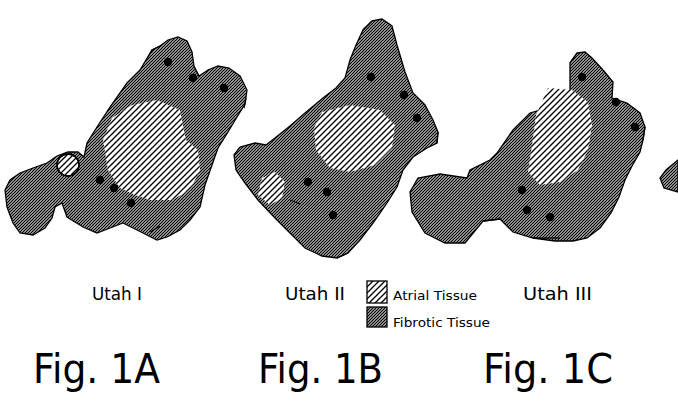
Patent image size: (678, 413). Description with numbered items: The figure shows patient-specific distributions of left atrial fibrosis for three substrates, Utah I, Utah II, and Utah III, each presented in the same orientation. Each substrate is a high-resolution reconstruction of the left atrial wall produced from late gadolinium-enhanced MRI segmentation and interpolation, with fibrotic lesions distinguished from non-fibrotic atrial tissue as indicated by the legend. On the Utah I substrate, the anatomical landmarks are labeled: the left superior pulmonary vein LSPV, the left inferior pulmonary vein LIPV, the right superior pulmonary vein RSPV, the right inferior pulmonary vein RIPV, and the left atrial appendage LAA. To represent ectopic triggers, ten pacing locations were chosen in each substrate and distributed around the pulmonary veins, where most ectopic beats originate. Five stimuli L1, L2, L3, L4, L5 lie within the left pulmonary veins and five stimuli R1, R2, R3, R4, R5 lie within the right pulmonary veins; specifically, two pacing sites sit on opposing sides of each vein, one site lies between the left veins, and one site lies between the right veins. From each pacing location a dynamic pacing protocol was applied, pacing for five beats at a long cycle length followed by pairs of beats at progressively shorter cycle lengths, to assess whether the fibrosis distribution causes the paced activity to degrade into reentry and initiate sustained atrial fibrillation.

In FIG. 1A, the right pulmonary vein pacing location R1 is at (196, 75).
In FIG. 1B, the right pulmonary vein pacing location R1 is at (407, 92).
In FIG. 1C, the right pulmonary vein pacing location R1 is at (619, 99).
In FIG. 1A, the right pulmonary vein pacing location R2 is at (228, 85).
In FIG. 1B, the right pulmonary vein pacing location R2 is at (421, 115).
In FIG. 1C, the right pulmonary vein pacing location R2 is at (639, 124).
In FIG. 1A, the right pulmonary vein pacing location R3 is at (247, 115).
In FIG. 1B, the right pulmonary vein pacing location R3 is at (443, 149).
In FIG. 1C, the right pulmonary vein pacing location R3 is at (650, 140).
In FIG. 1A, the right pulmonary vein pacing location R4 is at (171, 59).
In FIG. 1B, the right pulmonary vein pacing location R4 is at (374, 74).
In FIG. 1C, the right pulmonary vein pacing location R4 is at (585, 74).
In FIG. 1A, the right pulmonary vein pacing location R5 is at (146, 53).
In FIG. 1B, the right pulmonary vein pacing location R5 is at (366, 27).
In FIG. 1C, the right pulmonary vein pacing location R5 is at (577, 50).
In FIG. 1A, the left pulmonary vein pacing location L1 is at (112, 192).
In FIG. 1B, the left pulmonary vein pacing location L1 is at (324, 195).
In FIG. 1C, the left pulmonary vein pacing location L1 is at (525, 214).
In FIG. 1A, the left pulmonary vein pacing location L2 is at (130, 207).
In FIG. 1B, the left pulmonary vein pacing location L2 is at (333, 219).
In FIG. 1C, the left pulmonary vein pacing location L2 is at (548, 221).
In FIG. 1A, the left pulmonary vein pacing location L3 is at (158, 228).
In FIG. 1B, the left pulmonary vein pacing location L3 is at (345, 256).
In FIG. 1C, the left pulmonary vein pacing location L3 is at (550, 241).
In FIG. 1A, the left pulmonary vein pacing location L4 is at (97, 184).
In FIG. 1B, the left pulmonary vein pacing location L4 is at (306, 179).
In FIG. 1C, the left pulmonary vein pacing location L4 is at (520, 186).
In FIG. 1A, the left pulmonary vein pacing location L5 is at (77, 181).
In FIG. 1B, the left pulmonary vein pacing location L5 is at (290, 203).
In FIG. 1C, the left pulmonary vein pacing location L5 is at (506, 190).
In FIG. 1A, the right superior pulmonary vein RSPV is at (164, 81).
In FIG. 1A, the right inferior pulmonary vein RIPV is at (218, 104).
In FIG. 1A, the left superior pulmonary vein LSPV is at (106, 169).
In FIG. 1A, the left inferior pulmonary vein LIPV is at (142, 189).
In FIG. 1A, the left atrial appendage LAA is at (26, 226).